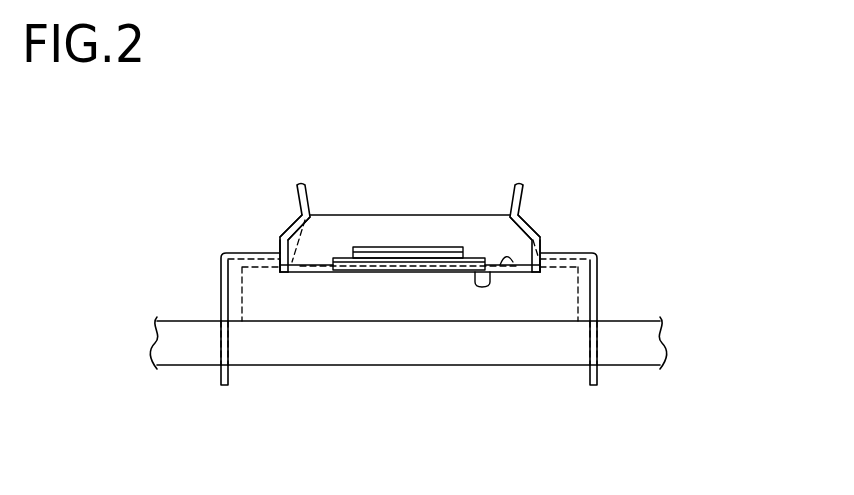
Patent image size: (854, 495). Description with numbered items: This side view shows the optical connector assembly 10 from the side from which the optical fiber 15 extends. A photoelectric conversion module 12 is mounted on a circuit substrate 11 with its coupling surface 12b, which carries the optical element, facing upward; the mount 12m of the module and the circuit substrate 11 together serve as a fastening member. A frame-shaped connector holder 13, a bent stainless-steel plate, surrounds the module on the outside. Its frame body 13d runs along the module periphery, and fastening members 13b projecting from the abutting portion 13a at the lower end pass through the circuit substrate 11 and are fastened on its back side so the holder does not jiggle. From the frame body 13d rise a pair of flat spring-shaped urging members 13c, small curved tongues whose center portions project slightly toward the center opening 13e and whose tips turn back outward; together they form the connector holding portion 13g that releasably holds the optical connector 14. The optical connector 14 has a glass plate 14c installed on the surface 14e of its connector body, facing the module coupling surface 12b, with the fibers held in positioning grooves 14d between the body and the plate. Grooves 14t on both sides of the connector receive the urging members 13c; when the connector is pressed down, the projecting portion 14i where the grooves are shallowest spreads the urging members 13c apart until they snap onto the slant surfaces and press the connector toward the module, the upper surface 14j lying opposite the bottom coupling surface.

The optical connector assembly 10 is at (605, 248).
The circuit substrate 11 is at (650, 320).
The photoelectric conversion module 12 is at (600, 272).
The mount 12m is at (565, 290).
The coupling surface 12b is at (522, 228).
The connector holder 13 is at (214, 249).
The abutting portion 13a is at (226, 330).
The fastening members 13b is at (216, 373).
The urging members 13c is at (300, 183).
The frame body 13d is at (600, 295).
The center opening 13e is at (303, 272).
The connector holding portion 13g is at (279, 197).
The optical connector 14 is at (376, 213).
The glass plate 14c is at (352, 272).
The positioning grooves 14d is at (343, 272).
The surface 14e is at (484, 263).
The projecting portion 14i is at (276, 240).
The upper surface 14j is at (523, 210).
The groove 14t is at (280, 262).
The optical fiber 15 is at (432, 248).